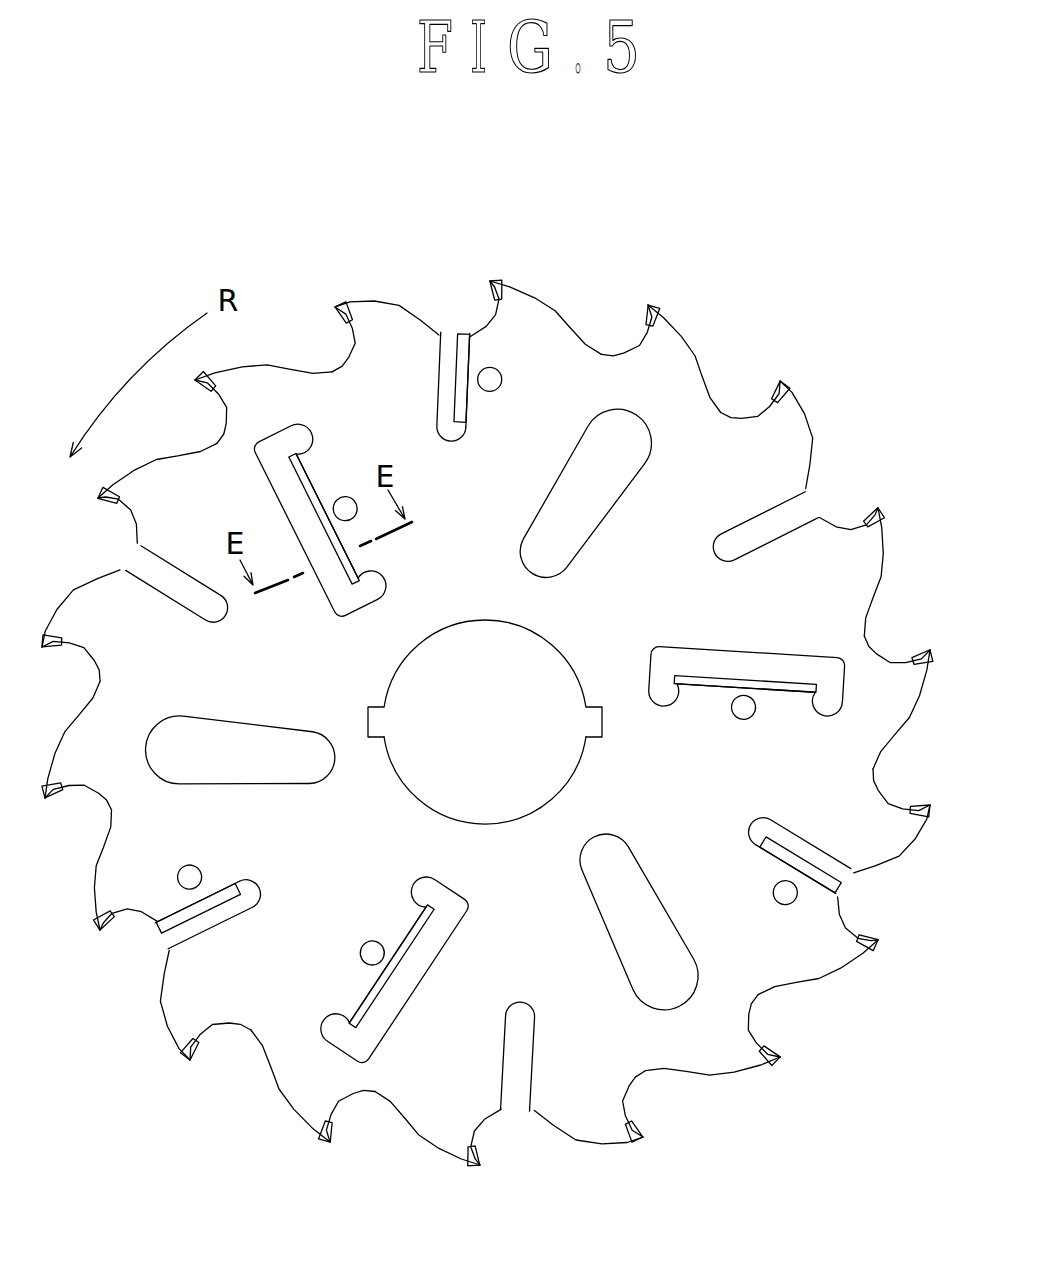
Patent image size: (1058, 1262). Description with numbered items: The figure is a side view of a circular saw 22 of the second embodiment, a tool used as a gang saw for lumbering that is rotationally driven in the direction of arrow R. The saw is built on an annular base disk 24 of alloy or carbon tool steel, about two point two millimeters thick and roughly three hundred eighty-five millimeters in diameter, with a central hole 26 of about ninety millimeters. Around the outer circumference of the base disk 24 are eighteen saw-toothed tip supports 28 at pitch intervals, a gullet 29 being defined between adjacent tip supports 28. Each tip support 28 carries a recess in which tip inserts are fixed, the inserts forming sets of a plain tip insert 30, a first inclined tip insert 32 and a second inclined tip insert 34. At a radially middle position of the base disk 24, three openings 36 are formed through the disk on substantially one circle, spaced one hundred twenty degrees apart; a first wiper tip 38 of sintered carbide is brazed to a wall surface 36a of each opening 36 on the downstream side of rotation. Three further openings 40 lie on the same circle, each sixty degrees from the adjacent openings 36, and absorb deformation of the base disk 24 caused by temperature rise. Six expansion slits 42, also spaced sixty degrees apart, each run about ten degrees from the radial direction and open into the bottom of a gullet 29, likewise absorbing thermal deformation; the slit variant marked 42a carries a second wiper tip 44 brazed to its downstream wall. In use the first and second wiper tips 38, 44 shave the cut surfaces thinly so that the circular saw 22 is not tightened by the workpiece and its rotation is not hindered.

The circular saw 22 is at (687, 286).
The base disk 24 is at (580, 633).
The central hole 26 is at (432, 806).
The tip support 28 is at (522, 302).
The gullet 29 is at (600, 352).
The plain tip insert 30 is at (489, 279).
The first inclined tip insert 32 is at (648, 305).
The second inclined tip insert 34 is at (333, 301).
The opening 36 is at (790, 668).
The wall surface 36a is at (733, 682).
The first wiper tip 38 is at (698, 676).
The opening 40 is at (607, 490).
The expansion slit 42 is at (752, 527).
The expansion slot with insert 42a is at (455, 420).
The second wiper tip 44 is at (458, 368).